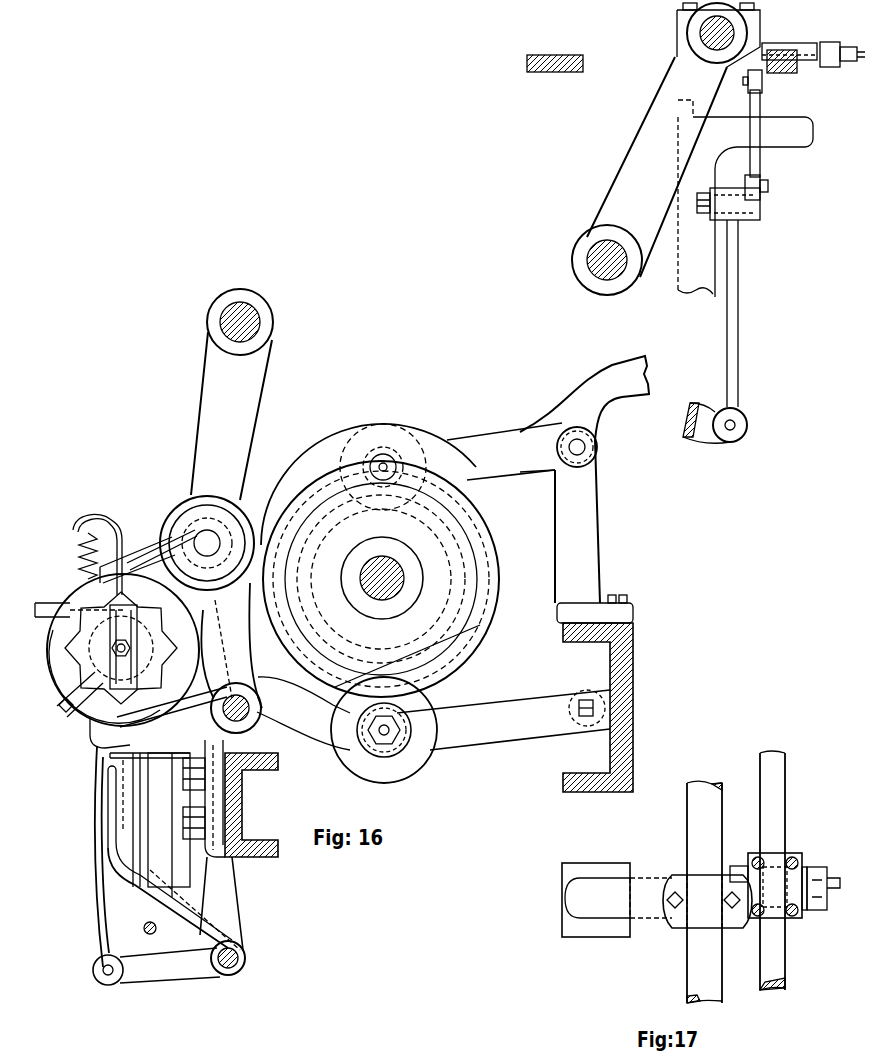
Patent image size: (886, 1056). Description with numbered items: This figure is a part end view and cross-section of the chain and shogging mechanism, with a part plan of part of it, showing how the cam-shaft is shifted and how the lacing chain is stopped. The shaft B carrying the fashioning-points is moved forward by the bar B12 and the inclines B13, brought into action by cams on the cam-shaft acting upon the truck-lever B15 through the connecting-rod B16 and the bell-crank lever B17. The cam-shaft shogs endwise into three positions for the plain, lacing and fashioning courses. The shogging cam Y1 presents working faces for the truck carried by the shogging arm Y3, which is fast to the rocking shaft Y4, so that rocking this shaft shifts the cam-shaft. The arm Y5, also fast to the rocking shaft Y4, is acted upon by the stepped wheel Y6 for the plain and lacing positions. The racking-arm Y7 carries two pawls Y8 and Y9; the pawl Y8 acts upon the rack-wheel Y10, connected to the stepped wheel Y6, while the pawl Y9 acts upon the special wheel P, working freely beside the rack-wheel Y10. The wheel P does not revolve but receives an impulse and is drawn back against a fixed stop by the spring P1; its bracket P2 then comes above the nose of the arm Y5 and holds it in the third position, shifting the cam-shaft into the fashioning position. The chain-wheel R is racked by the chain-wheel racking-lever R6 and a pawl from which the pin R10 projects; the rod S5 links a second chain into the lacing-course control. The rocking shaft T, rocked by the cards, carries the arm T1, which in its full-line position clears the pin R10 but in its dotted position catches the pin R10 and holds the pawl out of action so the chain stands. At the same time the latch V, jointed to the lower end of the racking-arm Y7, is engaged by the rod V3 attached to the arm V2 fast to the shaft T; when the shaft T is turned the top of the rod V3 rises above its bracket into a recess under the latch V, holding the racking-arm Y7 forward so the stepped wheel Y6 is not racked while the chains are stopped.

In FIG. 16, the shaft B is at (666, 149).
In FIG. 17, the shaft B is at (704, 892).
In FIG. 16, the bar B12 is at (790, 75).
In FIG. 17, the bar B12 is at (794, 870).
In FIG. 16, the inclines B13 is at (760, 45).
In FIG. 17, the inclines B13 is at (740, 866).
In FIG. 16, the truck-lever B15 is at (700, 448).
In FIG. 16, the connecting-rod B16 is at (739, 318).
In FIG. 16, the bell-crank lever B17 is at (761, 155).
In FIG. 16, the shogging cam Y1 is at (500, 560).
In FIG. 16, the shogging arm Y3 is at (211, 602).
In FIG. 16, the rocking shaft Y4 is at (236, 708).
In FIG. 16, the arm Y5 is at (110, 733).
In FIG. 16, the stepped wheel Y6 is at (123, 650).
In FIG. 16, the racking-arm Y7 is at (232, 394).
In FIG. 16, the pawl Y8 is at (156, 533).
In FIG. 16, the pawl Y9 is at (122, 555).
In FIG. 16, the rack-wheel Y10 is at (172, 707).
In FIG. 16, the special wheel P is at (83, 708).
In FIG. 16, the spring P1 is at (84, 542).
In FIG. 16, the bracket P2 is at (60, 703).
In FIG. 16, the latch V is at (52, 607).
In FIG. 16, the arm V2 is at (156, 966).
In FIG. 16, the rod V3 is at (92, 897).
In FIG. 16, the chain-wheel R is at (156, 825).
In FIG. 16, the chain-wheel racking-lever R6 is at (433, 730).
In FIG. 16, the pin R10 is at (108, 756).
In FIG. 16, the rod S5 is at (144, 928).
In FIG. 16, the rocking shaft T is at (246, 958).
In FIG. 16, the arm T1 is at (174, 858).